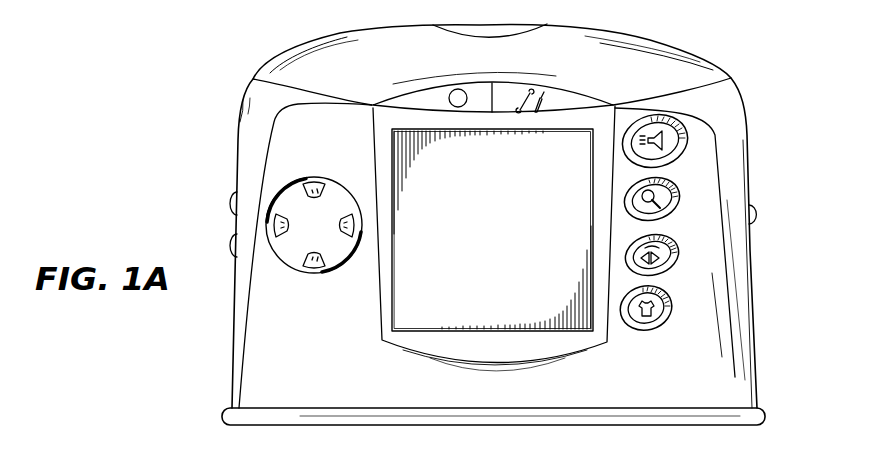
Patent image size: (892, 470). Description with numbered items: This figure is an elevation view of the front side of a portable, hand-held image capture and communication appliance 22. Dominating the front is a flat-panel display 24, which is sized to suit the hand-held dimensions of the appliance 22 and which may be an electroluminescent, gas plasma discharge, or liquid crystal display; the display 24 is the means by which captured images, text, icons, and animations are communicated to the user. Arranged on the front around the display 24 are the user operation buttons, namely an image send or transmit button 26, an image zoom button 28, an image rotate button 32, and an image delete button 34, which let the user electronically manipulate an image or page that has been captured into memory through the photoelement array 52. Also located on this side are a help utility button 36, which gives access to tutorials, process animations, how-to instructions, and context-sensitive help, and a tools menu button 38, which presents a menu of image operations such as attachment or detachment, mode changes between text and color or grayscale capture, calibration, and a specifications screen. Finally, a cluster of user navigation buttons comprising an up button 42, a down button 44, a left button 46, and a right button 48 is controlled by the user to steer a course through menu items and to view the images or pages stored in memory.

The image capture and communication appliance 22 is at (677, 22).
The flat-panel display 24 is at (425, 185).
The image send button 26 is at (657, 142).
The image zoom button 28 is at (652, 201).
The image rotate button 32 is at (652, 258).
The image delete button 34 is at (648, 311).
The help utility button 36 is at (457, 91).
The tools menu button 38 is at (521, 92).
The up button 42 is at (310, 186).
The down button 44 is at (310, 268).
The left button 46 is at (278, 223).
The right button 48 is at (347, 225).
The photoelement array 52 is at (266, 412).